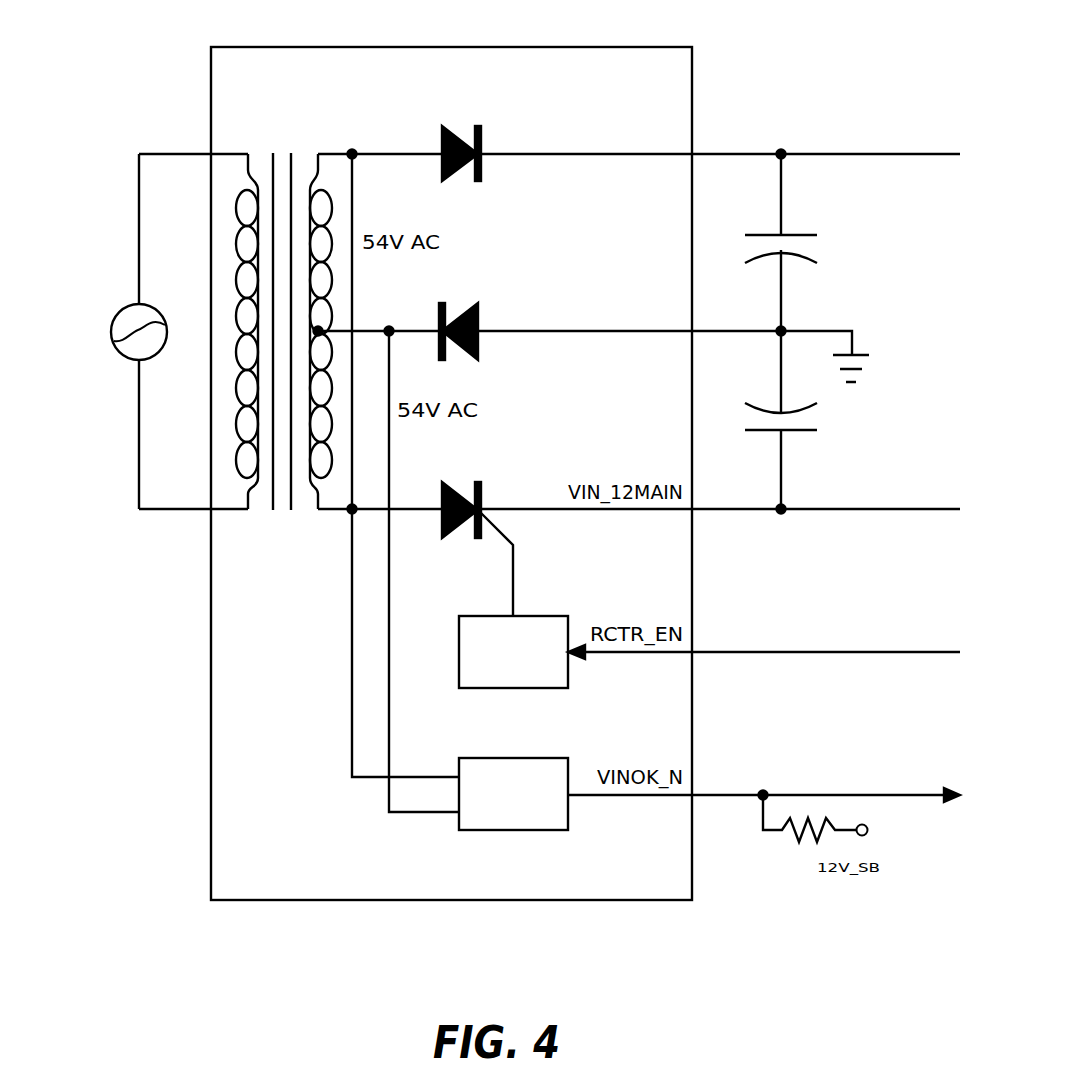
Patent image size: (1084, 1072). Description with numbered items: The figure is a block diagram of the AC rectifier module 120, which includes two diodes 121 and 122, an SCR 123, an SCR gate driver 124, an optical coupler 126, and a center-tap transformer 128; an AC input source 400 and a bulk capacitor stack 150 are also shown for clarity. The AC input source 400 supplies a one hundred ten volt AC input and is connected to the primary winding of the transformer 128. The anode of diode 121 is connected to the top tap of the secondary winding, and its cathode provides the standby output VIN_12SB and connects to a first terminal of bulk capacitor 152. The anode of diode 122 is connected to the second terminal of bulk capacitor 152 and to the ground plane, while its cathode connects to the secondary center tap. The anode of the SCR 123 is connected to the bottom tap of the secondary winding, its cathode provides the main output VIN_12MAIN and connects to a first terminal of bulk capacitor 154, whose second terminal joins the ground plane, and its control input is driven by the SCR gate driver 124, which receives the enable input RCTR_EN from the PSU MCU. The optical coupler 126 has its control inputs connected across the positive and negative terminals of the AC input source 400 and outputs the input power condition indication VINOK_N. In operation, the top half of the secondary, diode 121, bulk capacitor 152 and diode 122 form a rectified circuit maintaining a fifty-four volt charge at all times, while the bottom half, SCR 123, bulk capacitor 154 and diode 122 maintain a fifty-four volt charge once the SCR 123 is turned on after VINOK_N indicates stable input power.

The AC rectifier module 120 is at (222, 46).
The diode 121 is at (442, 128).
The diode 122 is at (478, 303).
The SCR 123 is at (442, 487).
The SCR gate driver 124 is at (475, 616).
The optical coupler 126 is at (475, 758).
The center-tap transformer 128 is at (269, 132).
The bulk capacitor stack 150 is at (818, 108).
The bulk capacitor 152 is at (808, 235).
The bulk capacitor 154 is at (808, 430).
The AC input source 400 is at (120, 313).